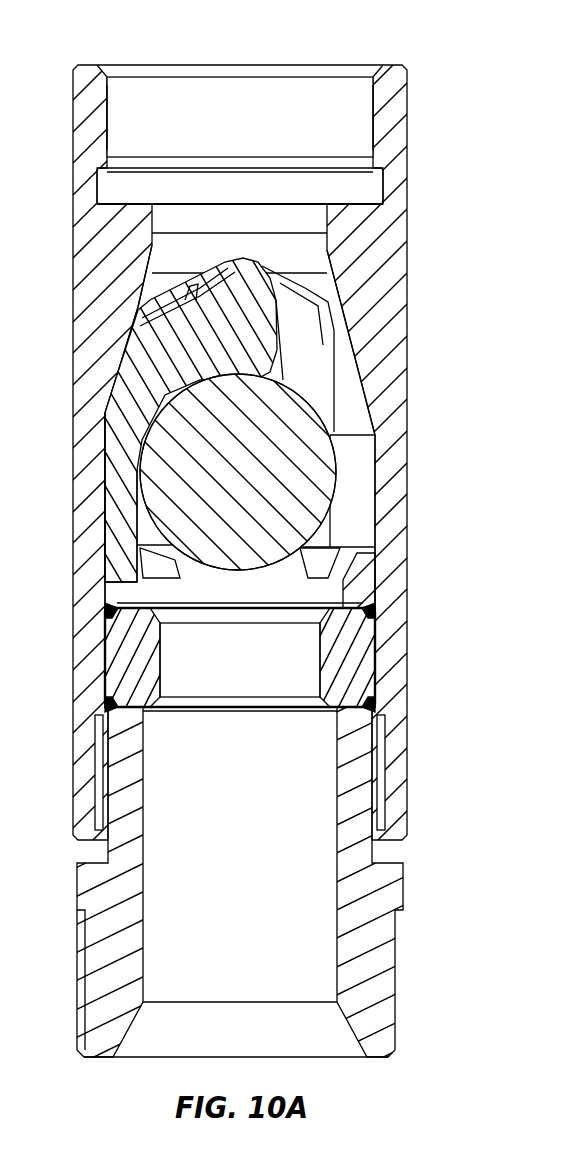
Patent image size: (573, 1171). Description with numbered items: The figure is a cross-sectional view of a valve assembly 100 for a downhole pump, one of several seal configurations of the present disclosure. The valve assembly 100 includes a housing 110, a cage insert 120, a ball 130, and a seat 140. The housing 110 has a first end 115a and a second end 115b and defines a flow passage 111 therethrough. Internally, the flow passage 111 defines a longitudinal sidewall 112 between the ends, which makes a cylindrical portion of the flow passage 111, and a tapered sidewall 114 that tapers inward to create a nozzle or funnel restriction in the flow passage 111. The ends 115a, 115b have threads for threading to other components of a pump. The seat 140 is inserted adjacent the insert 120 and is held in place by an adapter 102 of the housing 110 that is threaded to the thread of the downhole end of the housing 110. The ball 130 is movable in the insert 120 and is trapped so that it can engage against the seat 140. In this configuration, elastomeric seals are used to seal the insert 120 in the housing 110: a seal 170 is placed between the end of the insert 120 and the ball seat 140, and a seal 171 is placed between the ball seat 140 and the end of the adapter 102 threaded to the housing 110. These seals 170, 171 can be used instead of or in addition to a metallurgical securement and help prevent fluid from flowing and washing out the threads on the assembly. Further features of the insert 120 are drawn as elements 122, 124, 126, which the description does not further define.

The valve assembly 100 is at (42, 76).
The adapter 102 is at (75, 888).
The housing 110 is at (78, 226).
The flow passage 111 is at (252, 103).
The longitudinal sidewall 112 is at (428, 520).
The tapered sidewall 114 is at (428, 400).
The first end 115a is at (424, 125).
The second end 115b is at (424, 790).
The cage insert 120 is at (286, 585).
The cage leg 122 is at (104, 546).
The cage flap 124 is at (120, 380).
The cage step 126 is at (90, 502).
The ball 130 is at (252, 487).
The seat 140 is at (105, 652).
The seal 170 is at (105, 608).
The seal 171 is at (105, 705).